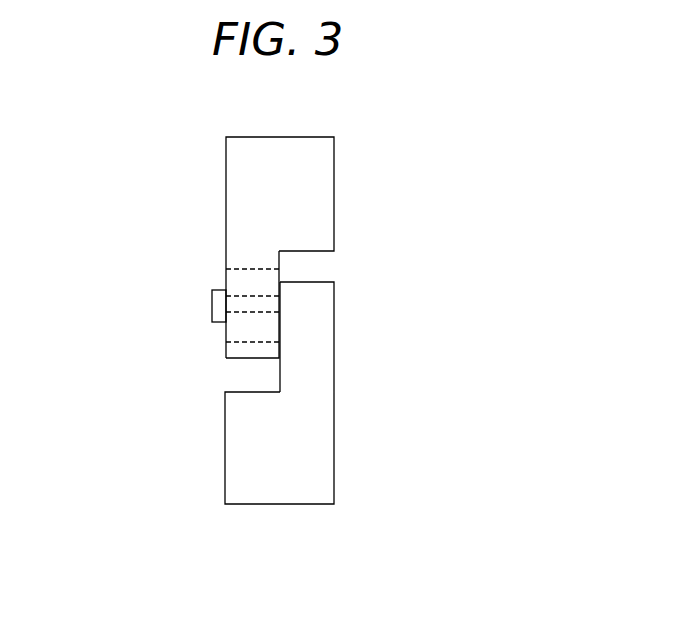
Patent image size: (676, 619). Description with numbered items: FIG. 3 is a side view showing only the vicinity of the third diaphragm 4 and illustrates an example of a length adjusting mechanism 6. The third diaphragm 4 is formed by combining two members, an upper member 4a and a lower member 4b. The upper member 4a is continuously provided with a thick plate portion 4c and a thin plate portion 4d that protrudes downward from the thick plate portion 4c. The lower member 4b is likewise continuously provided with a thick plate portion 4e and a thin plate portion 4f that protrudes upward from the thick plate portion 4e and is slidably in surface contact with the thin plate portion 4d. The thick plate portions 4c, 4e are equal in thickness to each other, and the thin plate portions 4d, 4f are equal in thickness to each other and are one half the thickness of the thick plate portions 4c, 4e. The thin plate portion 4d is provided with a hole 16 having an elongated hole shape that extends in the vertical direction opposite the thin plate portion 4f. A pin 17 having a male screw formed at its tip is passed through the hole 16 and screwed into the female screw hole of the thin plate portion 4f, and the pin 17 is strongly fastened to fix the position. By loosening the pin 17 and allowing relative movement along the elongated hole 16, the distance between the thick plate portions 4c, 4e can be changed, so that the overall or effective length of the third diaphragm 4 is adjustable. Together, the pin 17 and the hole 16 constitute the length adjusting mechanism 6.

The third diaphragm 4 is at (486, 278).
The upper member 4a is at (335, 234).
The lower member 4b is at (335, 403).
The thick plate portion 4c is at (245, 192).
The thin plate portion 4d is at (227, 345).
The thick plate portion 4e is at (242, 442).
The thin plate portion 4f is at (322, 363).
The length adjusting mechanism 6 is at (128, 228).
The hole 16 is at (217, 335).
The pin 17 is at (232, 313).